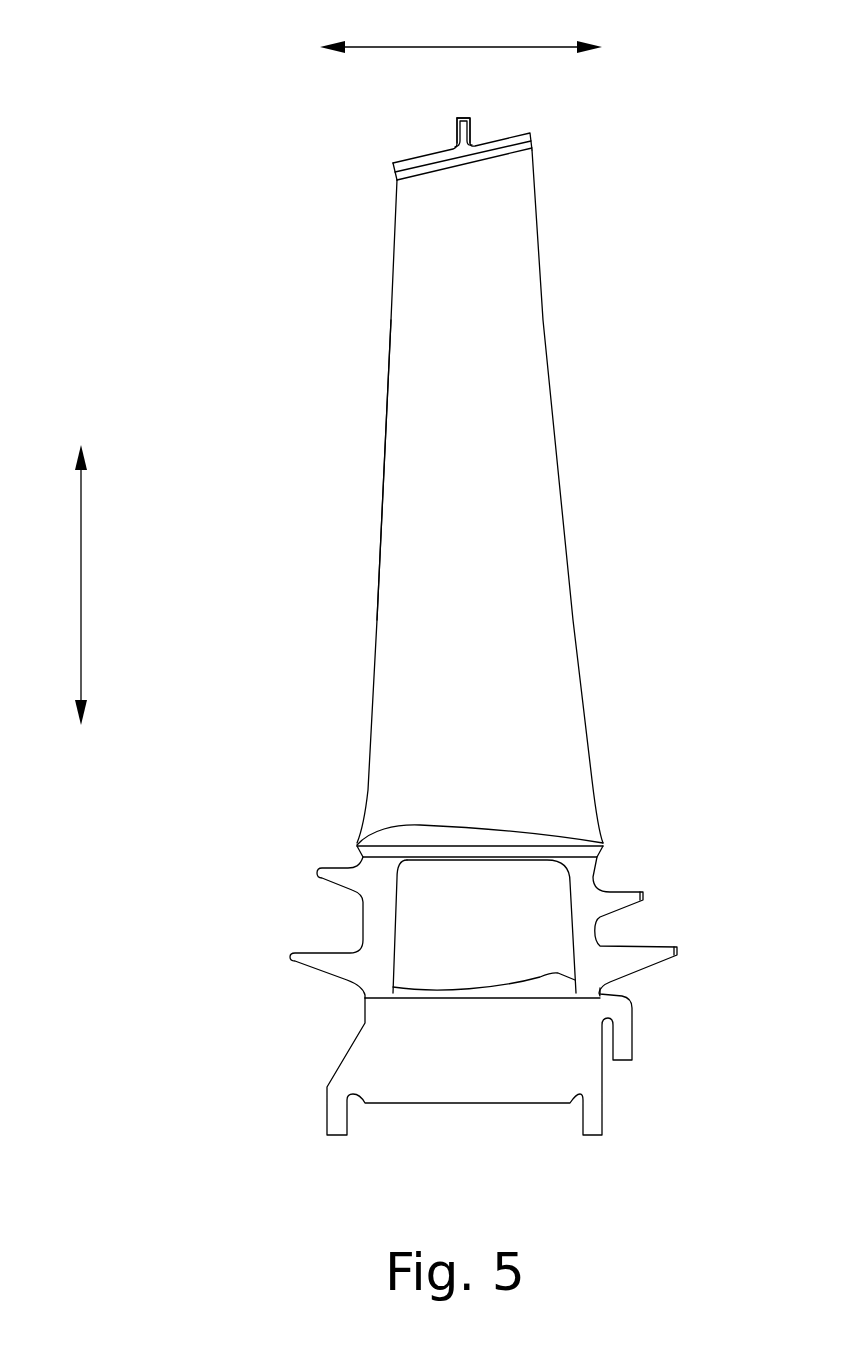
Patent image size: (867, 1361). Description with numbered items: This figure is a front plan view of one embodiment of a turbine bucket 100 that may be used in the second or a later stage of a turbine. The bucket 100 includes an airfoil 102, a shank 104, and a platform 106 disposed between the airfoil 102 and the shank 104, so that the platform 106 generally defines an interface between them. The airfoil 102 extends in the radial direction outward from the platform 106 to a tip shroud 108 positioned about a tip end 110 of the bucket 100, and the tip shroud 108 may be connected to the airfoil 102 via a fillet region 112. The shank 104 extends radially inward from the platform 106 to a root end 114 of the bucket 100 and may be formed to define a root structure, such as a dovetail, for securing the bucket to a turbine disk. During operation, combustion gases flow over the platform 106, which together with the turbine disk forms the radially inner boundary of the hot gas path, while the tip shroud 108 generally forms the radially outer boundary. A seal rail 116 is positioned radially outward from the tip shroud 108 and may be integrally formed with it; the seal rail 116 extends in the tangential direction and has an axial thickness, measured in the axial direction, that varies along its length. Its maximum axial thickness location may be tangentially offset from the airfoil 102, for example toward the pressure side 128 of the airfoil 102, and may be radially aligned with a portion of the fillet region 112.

The turbine bucket 100 is at (174, 64).
The airfoil 102 is at (572, 597).
The shank 104 is at (593, 932).
The platform 106 is at (358, 838).
The tip shroud 108 is at (530, 133).
The tip end 110 is at (412, 123).
The fillet region 112 is at (505, 152).
The root end 114 is at (566, 1164).
The seal rail 116 is at (475, 117).
The pressure side 128 is at (412, 390).